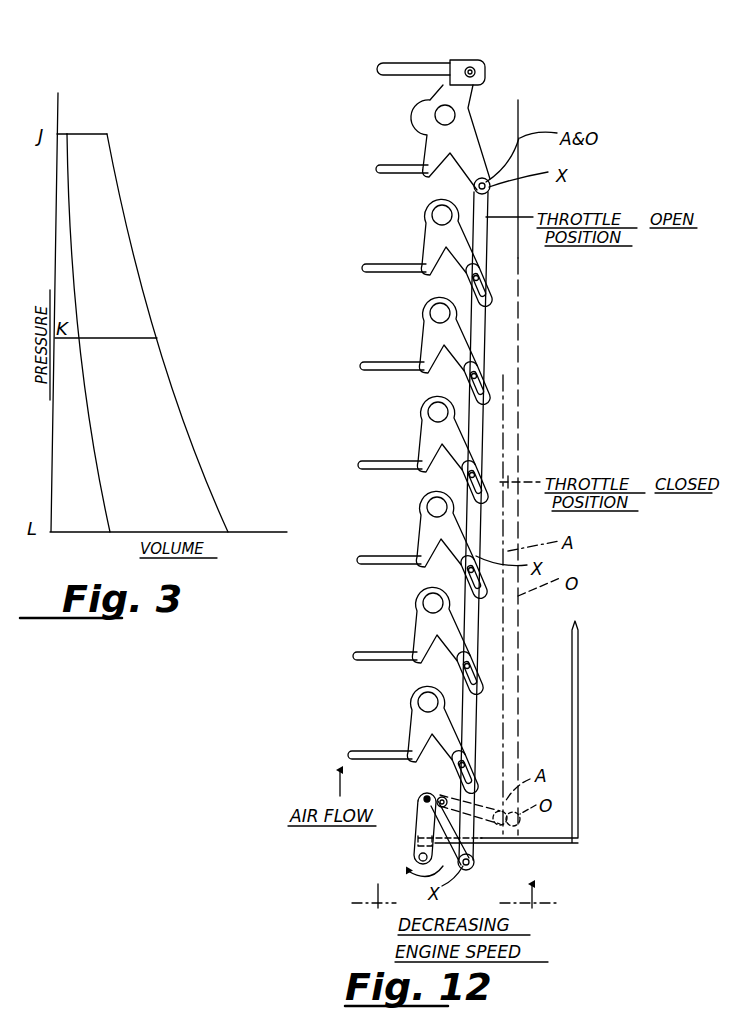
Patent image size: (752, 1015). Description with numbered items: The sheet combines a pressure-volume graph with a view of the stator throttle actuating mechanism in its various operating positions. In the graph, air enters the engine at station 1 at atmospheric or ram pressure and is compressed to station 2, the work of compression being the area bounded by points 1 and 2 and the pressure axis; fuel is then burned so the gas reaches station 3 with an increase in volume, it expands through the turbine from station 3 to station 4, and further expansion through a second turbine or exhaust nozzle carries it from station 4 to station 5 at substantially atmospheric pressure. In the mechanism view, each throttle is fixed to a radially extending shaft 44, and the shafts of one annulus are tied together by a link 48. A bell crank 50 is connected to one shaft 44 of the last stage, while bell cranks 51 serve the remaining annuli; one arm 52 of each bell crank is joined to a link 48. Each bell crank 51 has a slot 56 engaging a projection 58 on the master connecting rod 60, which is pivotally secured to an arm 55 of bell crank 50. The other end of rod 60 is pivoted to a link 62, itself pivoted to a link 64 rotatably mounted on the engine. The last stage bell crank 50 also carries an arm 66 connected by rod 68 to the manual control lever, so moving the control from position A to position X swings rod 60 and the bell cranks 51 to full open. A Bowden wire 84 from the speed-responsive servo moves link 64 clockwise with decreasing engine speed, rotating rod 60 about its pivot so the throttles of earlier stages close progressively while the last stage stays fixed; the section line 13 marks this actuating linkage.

In FIG. 3, the station 1 is at (92, 349).
In FIG. 3, the station 2 is at (69, 121).
In FIG. 3, the station 3 is at (98, 133).
In FIG. 3, the station 4 is at (117, 339).
In FIG. 3, the station 5 is at (178, 333).
In FIG. 12, the section line 13 is at (456, 892).
In FIG. 12, the radially extending shaft 44 is at (440, 114).
In FIG. 12, the link 48 is at (397, 174).
In FIG. 12, the bell crank 50 is at (463, 128).
In FIG. 12, the bell crank 51 is at (435, 240).
In FIG. 12, the arm 52 is at (432, 145).
In FIG. 12, the arm 55 is at (475, 166).
In FIG. 12, the slot 56 is at (486, 386).
In FIG. 12, the projection 58 is at (482, 372).
In FIG. 12, the master connecting rod 60 is at (475, 419).
In FIG. 12, the link 62 is at (490, 852).
In FIG. 12, the link 64 is at (419, 816).
In FIG. 12, the arm 66 is at (470, 92).
In FIG. 12, the rod 68 is at (412, 69).
In FIG. 12, the Bowden wire 84 is at (580, 685).